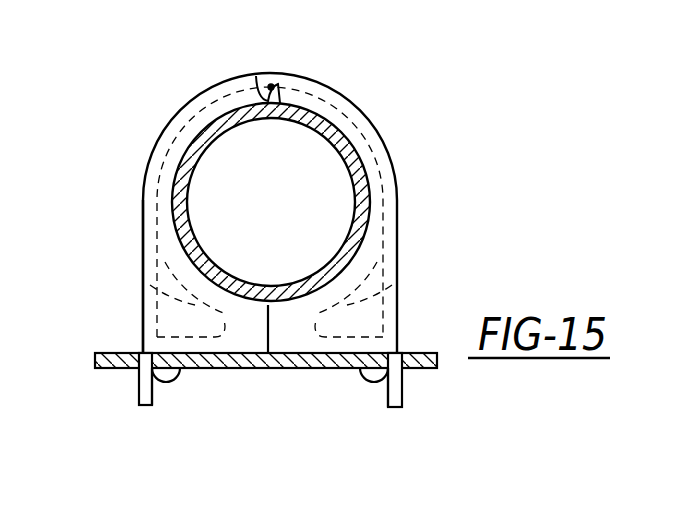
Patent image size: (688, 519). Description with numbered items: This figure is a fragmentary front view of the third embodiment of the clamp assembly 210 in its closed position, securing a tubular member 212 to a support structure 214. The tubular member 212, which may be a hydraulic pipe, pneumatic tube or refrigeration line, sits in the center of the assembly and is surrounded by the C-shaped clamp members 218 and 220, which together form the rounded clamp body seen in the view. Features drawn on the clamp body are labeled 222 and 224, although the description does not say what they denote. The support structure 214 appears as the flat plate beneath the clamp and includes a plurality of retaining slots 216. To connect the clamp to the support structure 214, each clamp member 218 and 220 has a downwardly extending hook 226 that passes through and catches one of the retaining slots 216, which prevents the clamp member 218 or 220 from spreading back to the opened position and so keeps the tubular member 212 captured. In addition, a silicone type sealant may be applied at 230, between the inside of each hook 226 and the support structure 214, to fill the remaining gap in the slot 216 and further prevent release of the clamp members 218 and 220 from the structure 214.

The clamp assembly 210 is at (346, 56).
The tubular member 212 is at (334, 150).
The support structure 214 is at (412, 343).
The retaining slots 216 is at (165, 373).
The first C-shaped clamp member 218 is at (385, 162).
The second C-shaped clamp member 220 is at (157, 163).
The notch 222 is at (256, 77).
The side wall 224 is at (176, 206).
The hook 226 is at (583, 0).
The sealant location 230 is at (152, 378).